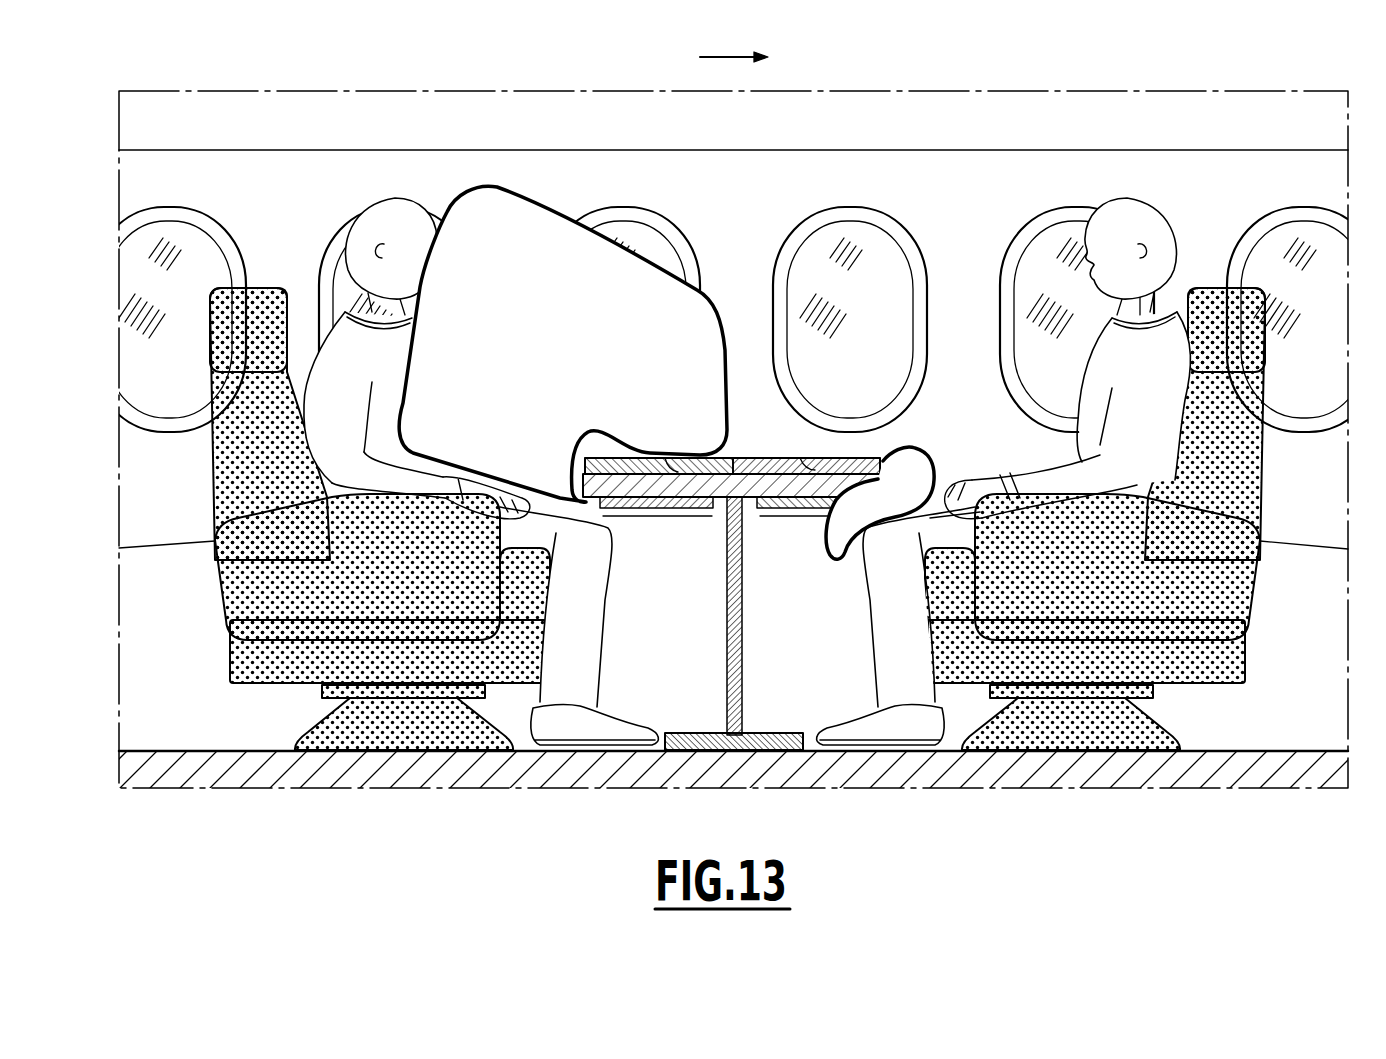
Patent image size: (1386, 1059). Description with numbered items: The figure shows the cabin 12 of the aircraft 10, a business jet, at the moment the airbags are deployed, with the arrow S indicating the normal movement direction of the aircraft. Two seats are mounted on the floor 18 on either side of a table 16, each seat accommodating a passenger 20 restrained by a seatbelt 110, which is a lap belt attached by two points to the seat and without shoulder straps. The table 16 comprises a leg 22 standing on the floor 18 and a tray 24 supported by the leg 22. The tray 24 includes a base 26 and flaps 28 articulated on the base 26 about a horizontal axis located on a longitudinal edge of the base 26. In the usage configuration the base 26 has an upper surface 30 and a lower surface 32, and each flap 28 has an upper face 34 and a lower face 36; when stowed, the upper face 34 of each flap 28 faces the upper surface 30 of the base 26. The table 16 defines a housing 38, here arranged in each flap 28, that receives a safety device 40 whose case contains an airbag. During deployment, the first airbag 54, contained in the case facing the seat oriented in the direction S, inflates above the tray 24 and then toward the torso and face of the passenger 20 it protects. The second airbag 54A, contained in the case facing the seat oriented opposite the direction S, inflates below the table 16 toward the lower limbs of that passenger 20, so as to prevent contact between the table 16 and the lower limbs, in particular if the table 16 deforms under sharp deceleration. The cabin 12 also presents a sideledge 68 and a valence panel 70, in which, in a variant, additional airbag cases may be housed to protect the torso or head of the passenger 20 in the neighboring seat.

The aircraft 10 is at (750, 213).
The cabin 12 is at (933, 181).
The table 16 is at (796, 535).
The floor 18 is at (1262, 742).
The passenger 20 is at (357, 245).
The leg 22 is at (747, 650).
The tray 24 is at (796, 427).
The base 26 is at (773, 452).
The flap 28 is at (608, 462).
The upper surface 30 is at (668, 458).
The lower surface 32 is at (746, 508).
The upper face 34 is at (788, 457).
The lower face 36 is at (818, 457).
The housing 38 is at (792, 510).
The safety device 40 is at (652, 513).
The airbag 54 is at (513, 267).
The second airbag 54A is at (913, 472).
The sideledge 68 is at (821, 697).
The valence panel 70 is at (1222, 134).
The seatbelt 110 is at (213, 487).
The direction S is at (734, 38).